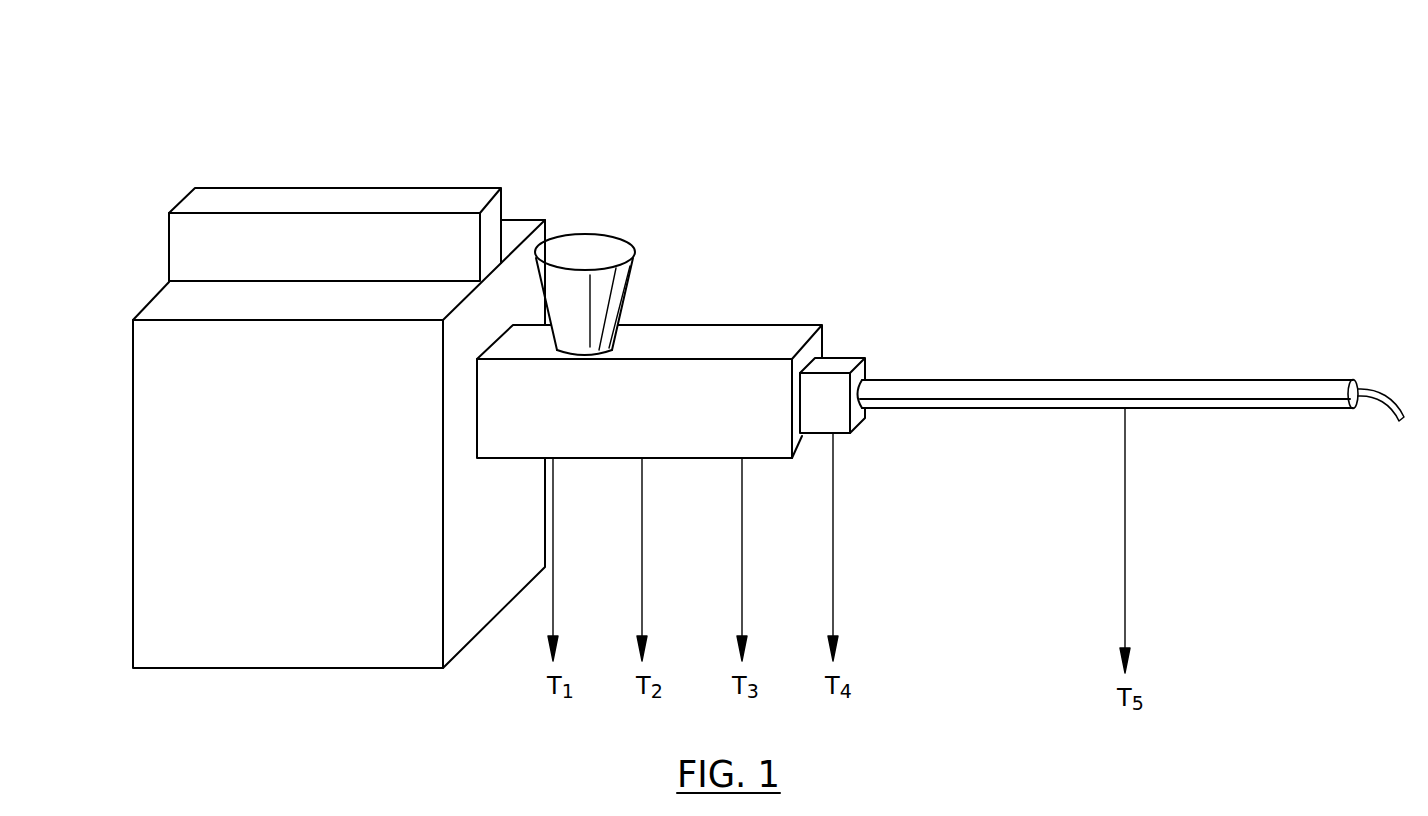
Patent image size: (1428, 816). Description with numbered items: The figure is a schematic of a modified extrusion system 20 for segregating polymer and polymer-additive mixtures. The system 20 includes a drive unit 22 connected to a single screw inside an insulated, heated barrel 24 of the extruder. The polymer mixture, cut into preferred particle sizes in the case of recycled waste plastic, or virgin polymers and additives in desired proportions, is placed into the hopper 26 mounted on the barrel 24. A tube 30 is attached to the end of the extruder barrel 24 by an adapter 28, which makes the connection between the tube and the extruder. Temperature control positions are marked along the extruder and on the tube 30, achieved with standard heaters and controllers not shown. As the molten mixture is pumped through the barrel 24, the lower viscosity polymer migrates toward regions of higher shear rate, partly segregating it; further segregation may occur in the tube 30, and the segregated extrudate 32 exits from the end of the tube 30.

The modified extrusion system 20 is at (310, 150).
The drive unit 22 is at (168, 300).
The barrel 24 is at (697, 329).
The hopper 26 is at (628, 246).
The adapter 28 is at (842, 362).
The tube 30 is at (1217, 382).
The segregated extrudate 32 is at (1382, 392).